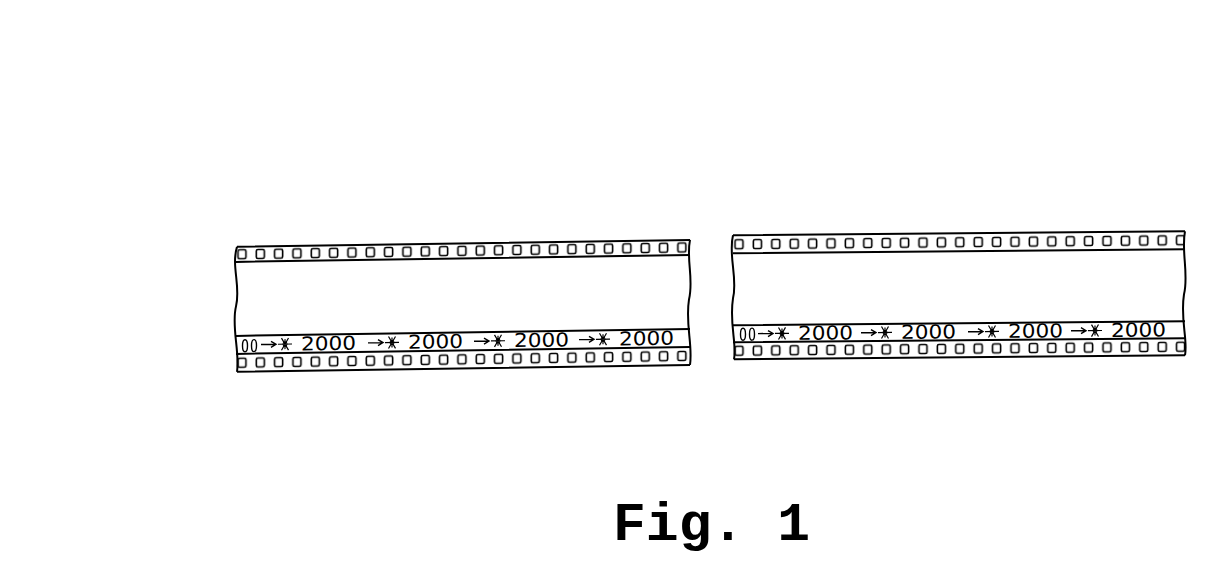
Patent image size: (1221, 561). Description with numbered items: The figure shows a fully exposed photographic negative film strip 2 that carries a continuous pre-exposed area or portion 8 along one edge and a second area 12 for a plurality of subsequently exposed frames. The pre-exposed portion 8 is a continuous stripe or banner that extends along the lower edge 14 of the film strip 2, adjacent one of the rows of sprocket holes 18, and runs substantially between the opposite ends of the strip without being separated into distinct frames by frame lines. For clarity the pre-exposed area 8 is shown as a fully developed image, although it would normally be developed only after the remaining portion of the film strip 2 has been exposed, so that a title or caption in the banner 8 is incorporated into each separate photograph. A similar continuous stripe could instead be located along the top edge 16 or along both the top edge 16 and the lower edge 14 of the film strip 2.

The pre-exposed film strip 2 is at (1177, 167).
The pre-exposed area or portion 8 is at (786, 348).
The image frame area 12 is at (778, 268).
The lower edge 14 is at (562, 367).
The top edge 16 is at (503, 240).
The sprocket holes 18 is at (422, 358).